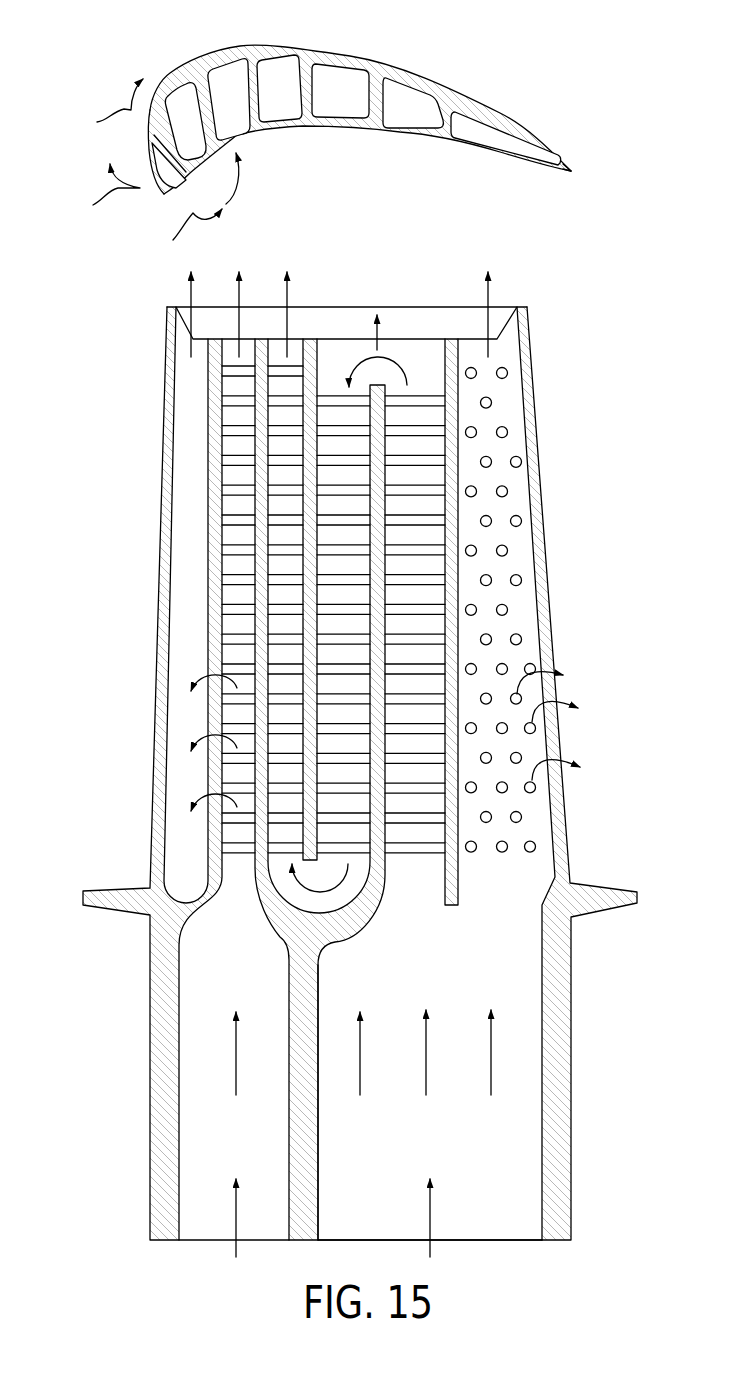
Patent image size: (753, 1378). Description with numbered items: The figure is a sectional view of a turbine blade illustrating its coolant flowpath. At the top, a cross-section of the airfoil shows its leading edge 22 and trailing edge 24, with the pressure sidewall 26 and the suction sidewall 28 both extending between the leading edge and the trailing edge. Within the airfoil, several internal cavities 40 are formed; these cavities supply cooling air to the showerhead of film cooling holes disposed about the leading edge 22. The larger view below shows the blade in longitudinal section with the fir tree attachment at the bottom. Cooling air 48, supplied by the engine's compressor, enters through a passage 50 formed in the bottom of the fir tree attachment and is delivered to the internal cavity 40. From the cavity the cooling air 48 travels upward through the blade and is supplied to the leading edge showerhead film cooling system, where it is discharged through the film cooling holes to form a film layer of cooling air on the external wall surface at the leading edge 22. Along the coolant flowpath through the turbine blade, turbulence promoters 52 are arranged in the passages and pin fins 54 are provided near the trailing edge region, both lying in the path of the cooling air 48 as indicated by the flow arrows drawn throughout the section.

The leading edge 22 is at (140, 136).
The trailing edge 24 is at (576, 169).
The pressure sidewall 26 is at (298, 128).
The suction sidewall 28 is at (350, 54).
The internal cavity 40 is at (181, 98).
The cooling air 48 is at (429, 1202).
The passage 50 is at (470, 959).
The turbulence promoters 52 is at (278, 118).
The pin fins 54 is at (523, 818).